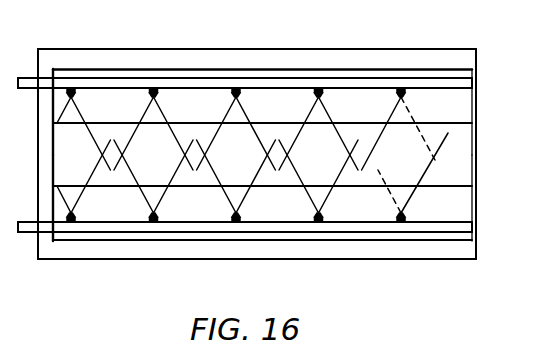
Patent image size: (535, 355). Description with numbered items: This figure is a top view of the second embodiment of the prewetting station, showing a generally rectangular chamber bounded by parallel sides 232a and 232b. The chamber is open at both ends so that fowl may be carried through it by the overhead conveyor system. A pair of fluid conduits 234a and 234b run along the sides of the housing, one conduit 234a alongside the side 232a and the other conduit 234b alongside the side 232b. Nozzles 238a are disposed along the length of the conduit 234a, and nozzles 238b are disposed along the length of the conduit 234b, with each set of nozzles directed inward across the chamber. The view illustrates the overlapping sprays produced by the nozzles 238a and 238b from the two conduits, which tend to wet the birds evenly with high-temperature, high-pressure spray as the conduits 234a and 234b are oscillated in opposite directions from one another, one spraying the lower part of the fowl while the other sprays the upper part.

The side of chamber 232b is at (330, 50).
The side of chamber 232a is at (330, 260).
The fluid conduit 234b is at (218, 78).
The fluid conduit 234a is at (189, 233).
The nozzles 238b is at (77, 90).
The nozzles 238a is at (77, 222).